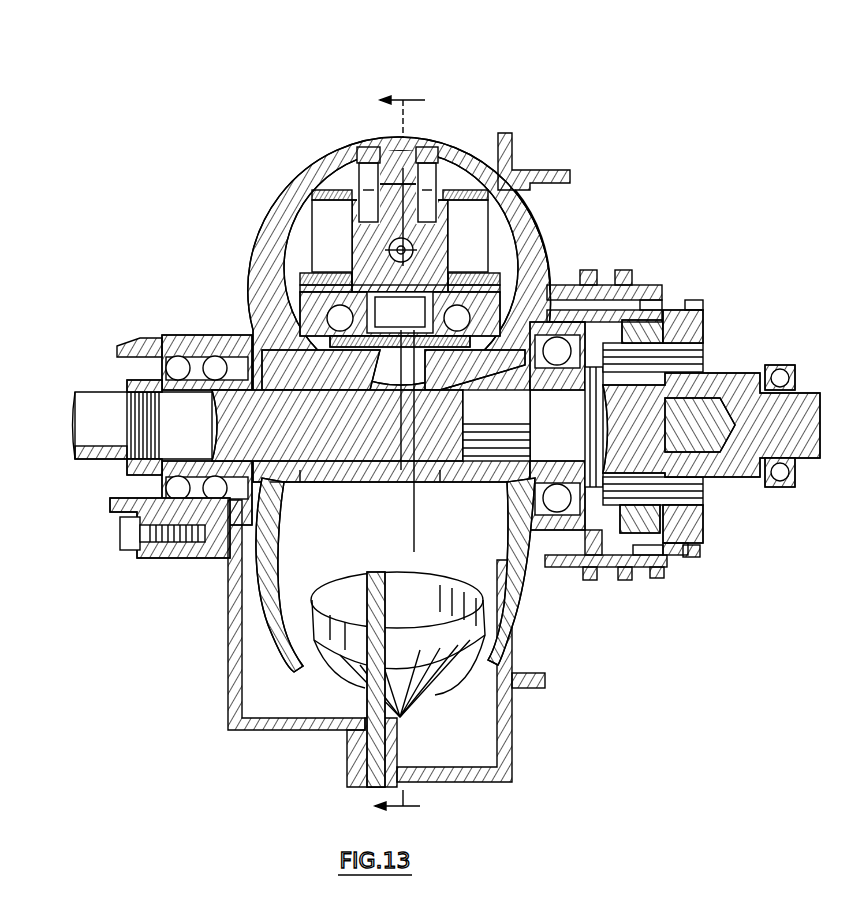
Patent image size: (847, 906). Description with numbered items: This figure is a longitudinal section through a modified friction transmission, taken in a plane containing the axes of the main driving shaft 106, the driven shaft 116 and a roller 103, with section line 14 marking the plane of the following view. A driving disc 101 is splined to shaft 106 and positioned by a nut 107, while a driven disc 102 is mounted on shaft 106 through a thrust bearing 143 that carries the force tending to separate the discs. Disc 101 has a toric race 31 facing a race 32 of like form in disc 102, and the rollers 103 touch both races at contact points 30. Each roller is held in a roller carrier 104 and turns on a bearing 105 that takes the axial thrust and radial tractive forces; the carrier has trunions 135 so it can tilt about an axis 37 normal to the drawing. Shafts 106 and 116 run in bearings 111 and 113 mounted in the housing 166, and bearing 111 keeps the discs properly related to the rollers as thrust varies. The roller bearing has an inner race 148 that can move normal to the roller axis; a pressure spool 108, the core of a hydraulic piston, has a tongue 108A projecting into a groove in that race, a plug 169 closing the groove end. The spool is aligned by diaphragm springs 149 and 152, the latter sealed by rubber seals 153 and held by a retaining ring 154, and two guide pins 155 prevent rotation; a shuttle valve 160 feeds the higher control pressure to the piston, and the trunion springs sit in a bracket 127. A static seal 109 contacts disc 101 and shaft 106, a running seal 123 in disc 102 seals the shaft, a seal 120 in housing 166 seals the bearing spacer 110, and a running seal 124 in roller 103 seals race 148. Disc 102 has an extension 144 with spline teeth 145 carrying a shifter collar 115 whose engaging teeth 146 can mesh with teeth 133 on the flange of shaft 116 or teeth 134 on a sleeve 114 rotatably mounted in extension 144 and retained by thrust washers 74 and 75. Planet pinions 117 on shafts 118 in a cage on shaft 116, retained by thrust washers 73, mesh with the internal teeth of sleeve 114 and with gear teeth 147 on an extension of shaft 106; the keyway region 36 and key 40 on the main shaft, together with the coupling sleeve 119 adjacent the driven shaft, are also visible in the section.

The section line 14- 14 is at (411, 93).
The contact points 30 is at (330, 345).
The toric race 31 is at (292, 582).
The race 32 is at (520, 582).
The keyway 36 is at (380, 432).
The axis 37 is at (392, 246).
The key 40 is at (496, 420).
The thrust washers 73 is at (720, 375).
The thrust washer 74 is at (700, 538).
The thrust washer 75 is at (663, 543).
The disc 101 is at (268, 642).
The disc 102 is at (530, 645).
The roller 103 is at (398, 428).
The roller carrier 104 is at (400, 148).
The bearing 105 is at (318, 352).
The main driving shaft 106 is at (105, 456).
The nut 107 is at (130, 470).
The pressure spool 108 is at (521, 196).
The tongue 108A is at (400, 312).
The static seal 109 is at (275, 478).
The bearing spacer 110 is at (322, 514).
The bearing 111 is at (165, 366).
The bearing 113 is at (796, 472).
The sleeve 114 is at (618, 565).
The shifter collar 115 is at (587, 275).
The driven shaft 116 is at (690, 460).
The pinions 117 is at (632, 563).
The shafts 118 is at (680, 498).
The coupling sleeve 119 is at (700, 468).
The seal 120 is at (290, 500).
The running seal 123 is at (420, 492).
The running seal 124 is at (335, 338).
The bracket 127 is at (330, 665).
The teeth 133 is at (697, 552).
The teeth 134 is at (642, 565).
The trunions 135 is at (340, 262).
The thrust bearing 143 is at (510, 500).
The extension 144 is at (600, 567).
The spline teeth 145 is at (607, 567).
The engaging teeth 146 is at (655, 284).
The gear teeth 147 is at (650, 380).
The inner race 148 is at (372, 480).
The diaphragm springs 149 is at (345, 193).
The diaphragm springs 152 is at (304, 272).
The rubber seals 153 is at (312, 288).
The retaining ring 154 is at (318, 310).
The guide pins 155 is at (358, 152).
The shuttle valve 160 is at (530, 222).
The housing 166 is at (230, 572).
The plug 169 is at (399, 558).